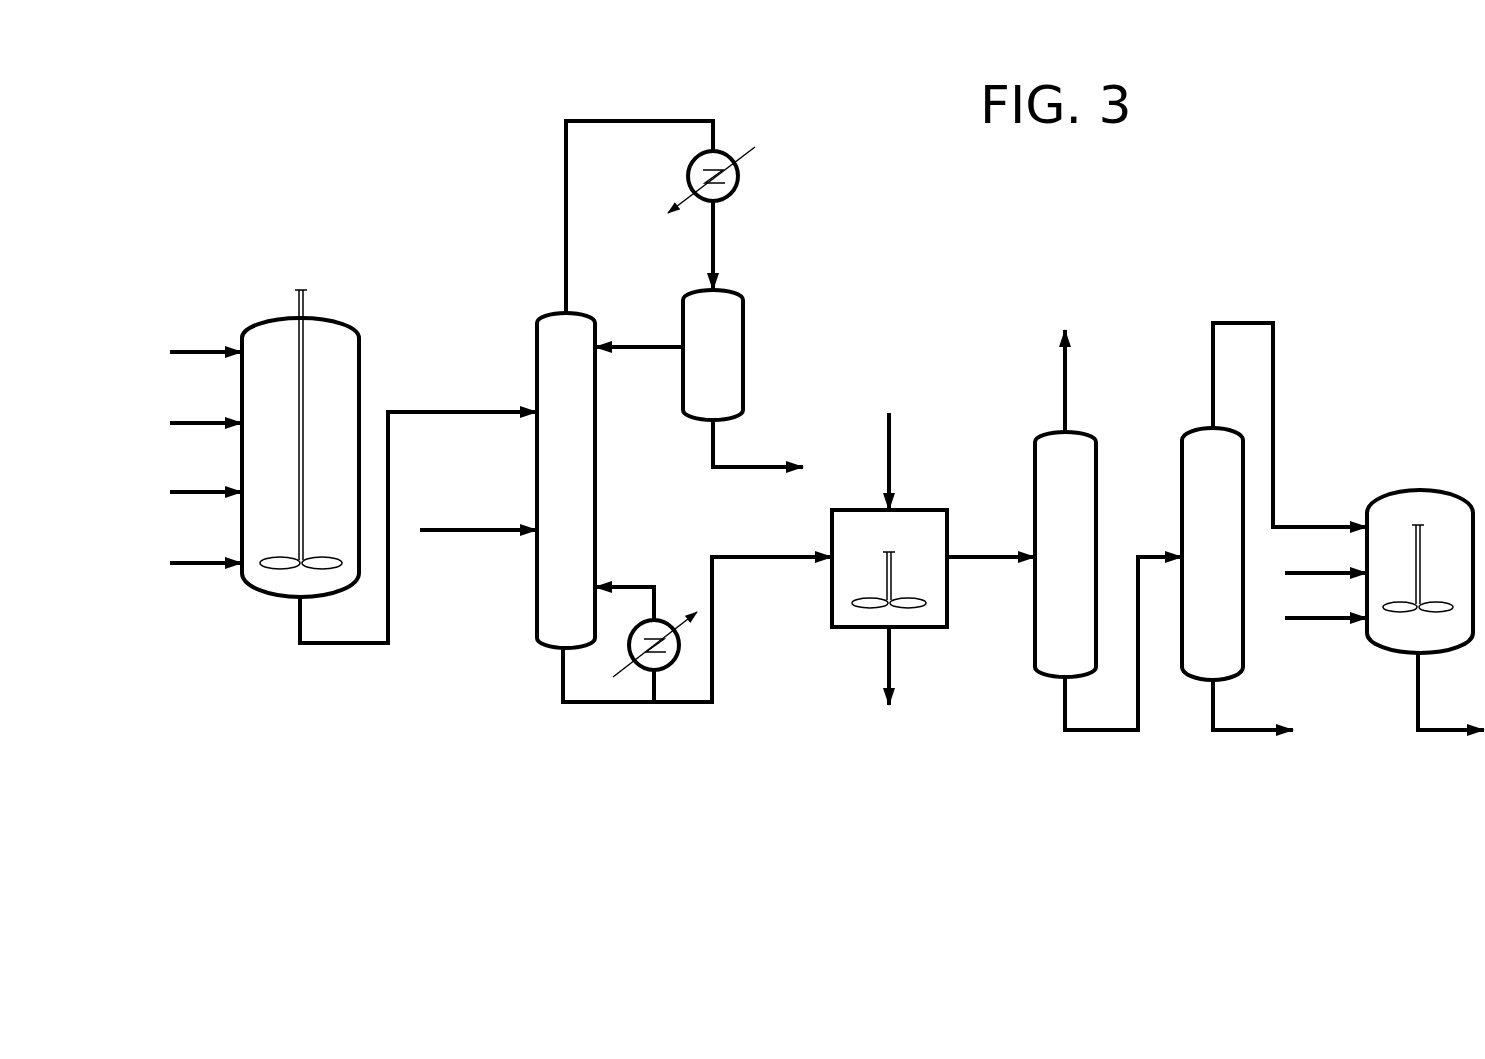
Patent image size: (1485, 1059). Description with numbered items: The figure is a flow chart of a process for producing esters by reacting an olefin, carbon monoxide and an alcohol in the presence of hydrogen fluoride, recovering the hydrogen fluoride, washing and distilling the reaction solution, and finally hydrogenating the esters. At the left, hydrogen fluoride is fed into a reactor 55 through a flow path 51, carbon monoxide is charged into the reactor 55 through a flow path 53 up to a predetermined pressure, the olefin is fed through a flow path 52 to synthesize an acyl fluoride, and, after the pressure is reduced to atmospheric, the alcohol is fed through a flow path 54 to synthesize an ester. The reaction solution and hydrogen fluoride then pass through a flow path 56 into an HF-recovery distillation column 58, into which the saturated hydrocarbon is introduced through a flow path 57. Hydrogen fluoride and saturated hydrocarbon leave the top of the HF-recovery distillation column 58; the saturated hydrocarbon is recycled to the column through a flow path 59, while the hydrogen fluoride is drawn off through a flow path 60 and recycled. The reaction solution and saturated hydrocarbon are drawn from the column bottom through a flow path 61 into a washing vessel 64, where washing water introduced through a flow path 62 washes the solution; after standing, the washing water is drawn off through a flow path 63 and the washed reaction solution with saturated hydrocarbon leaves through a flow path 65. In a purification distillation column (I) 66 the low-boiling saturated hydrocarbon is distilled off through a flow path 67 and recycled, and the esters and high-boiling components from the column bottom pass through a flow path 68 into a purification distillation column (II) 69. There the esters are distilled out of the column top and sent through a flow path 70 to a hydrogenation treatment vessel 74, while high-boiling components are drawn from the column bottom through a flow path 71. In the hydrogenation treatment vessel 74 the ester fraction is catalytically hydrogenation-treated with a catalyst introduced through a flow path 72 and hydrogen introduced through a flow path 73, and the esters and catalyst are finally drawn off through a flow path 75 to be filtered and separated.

The flow path 51 is at (191, 353).
The flow path 52 is at (188, 423).
The flow path 53 is at (188, 492).
The flow path 54 is at (186, 563).
The reactor 55 is at (347, 328).
The flow path 56 is at (443, 411).
The flow path 57 is at (443, 528).
The HF-recovery distillation column 58 is at (540, 326).
The flow path 59 is at (637, 345).
The flow path 60 is at (765, 466).
The flow path 61 is at (730, 556).
The flow path 62 is at (888, 437).
The flow path 63 is at (891, 663).
The washing vessel 64 is at (931, 509).
The flow path 65 is at (980, 555).
The purification distillation column (I) 66 is at (1041, 432).
The flow path 67 is at (1062, 365).
The flow path 68 is at (1146, 555).
The purification distillation column (II) 69 is at (1192, 432).
The flow path 70 is at (1311, 523).
The flow path 71 is at (1267, 729).
The flow path 72 is at (1308, 573).
The flow path 73 is at (1308, 618).
The hydrogenation treatment vessel 74 is at (1380, 500).
The flow path 75 is at (1462, 729).